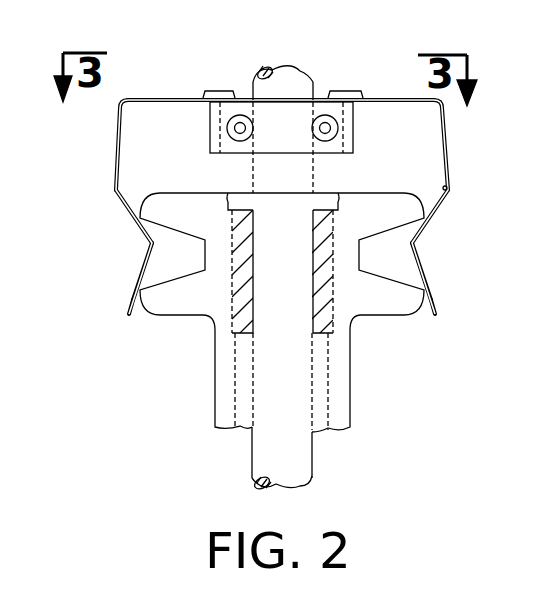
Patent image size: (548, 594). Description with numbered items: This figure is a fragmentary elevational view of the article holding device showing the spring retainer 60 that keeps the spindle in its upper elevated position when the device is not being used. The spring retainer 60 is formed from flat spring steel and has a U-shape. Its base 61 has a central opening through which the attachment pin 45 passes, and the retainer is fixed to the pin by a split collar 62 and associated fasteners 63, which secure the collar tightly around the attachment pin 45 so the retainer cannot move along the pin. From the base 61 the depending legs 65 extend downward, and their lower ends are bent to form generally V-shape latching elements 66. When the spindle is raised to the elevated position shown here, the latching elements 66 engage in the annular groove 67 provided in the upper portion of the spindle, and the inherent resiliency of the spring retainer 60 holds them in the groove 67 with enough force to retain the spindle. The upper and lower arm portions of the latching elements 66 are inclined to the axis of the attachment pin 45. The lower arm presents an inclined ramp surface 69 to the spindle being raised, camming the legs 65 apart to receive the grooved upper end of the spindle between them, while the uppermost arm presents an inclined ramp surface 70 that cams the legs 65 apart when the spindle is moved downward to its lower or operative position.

The attachment pin 45 is at (297, 80).
The spring retainer 60 is at (294, 201).
The base 61 is at (163, 98).
The split collar 62 is at (355, 120).
The fasteners 63 is at (227, 129).
The depending legs 65 is at (115, 153).
The latching elements 66 is at (143, 258).
The annular groove 67 is at (175, 268).
The inclined ramp surface 69 is at (137, 308).
The inclined ramp surface 70 is at (123, 197).